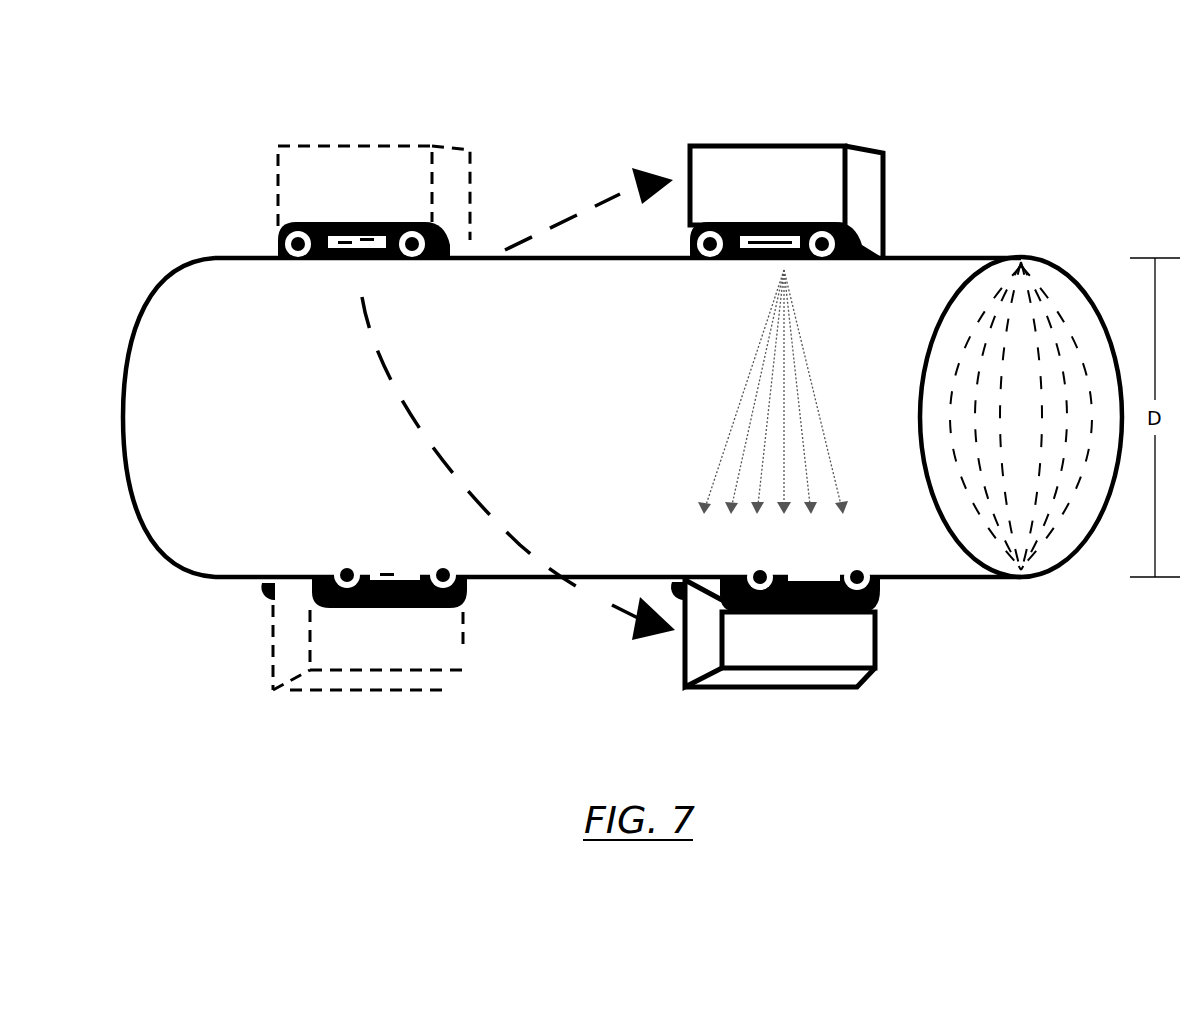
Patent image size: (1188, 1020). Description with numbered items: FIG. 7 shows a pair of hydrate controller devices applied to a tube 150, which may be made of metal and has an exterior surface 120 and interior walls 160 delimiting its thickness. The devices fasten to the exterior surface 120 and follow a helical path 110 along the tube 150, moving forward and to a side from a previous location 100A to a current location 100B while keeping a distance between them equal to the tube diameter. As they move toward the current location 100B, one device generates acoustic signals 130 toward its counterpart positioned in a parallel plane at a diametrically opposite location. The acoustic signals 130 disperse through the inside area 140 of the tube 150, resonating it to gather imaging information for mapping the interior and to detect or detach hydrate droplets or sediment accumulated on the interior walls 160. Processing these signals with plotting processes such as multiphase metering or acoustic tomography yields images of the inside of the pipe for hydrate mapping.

The previous location 100A is at (365, 170).
The current location 100B is at (800, 172).
The helical path 110 is at (618, 194).
The exterior surface 120 is at (962, 255).
The acoustic signals 130 is at (765, 322).
The inside area 140 is at (582, 368).
The tube 150 is at (880, 490).
The interior walls 160 is at (1027, 535).